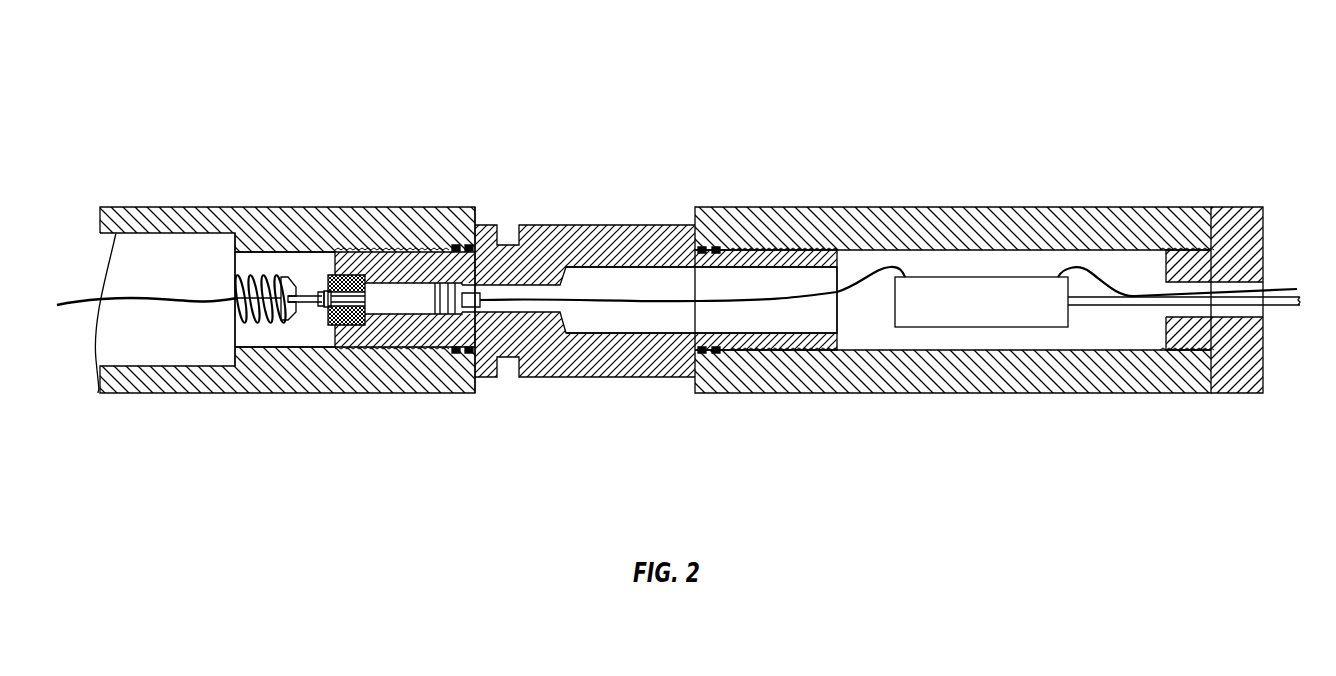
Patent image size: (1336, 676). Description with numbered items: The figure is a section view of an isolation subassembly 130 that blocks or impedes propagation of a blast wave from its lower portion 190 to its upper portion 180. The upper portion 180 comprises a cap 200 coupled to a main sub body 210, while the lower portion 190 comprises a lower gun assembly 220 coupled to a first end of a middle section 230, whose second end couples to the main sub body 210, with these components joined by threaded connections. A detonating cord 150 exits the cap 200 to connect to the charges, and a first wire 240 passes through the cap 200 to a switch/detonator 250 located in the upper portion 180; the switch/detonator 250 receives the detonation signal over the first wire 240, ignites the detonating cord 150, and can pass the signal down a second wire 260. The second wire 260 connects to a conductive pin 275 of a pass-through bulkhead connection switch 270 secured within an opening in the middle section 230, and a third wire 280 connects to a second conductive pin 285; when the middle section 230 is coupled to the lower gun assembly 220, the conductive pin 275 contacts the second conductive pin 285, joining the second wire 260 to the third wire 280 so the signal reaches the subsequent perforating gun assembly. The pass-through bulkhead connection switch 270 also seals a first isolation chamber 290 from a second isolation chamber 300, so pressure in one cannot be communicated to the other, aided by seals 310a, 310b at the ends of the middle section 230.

The isolation subassembly 130 is at (1060, 88).
The detonating cord 150 is at (1279, 307).
The upper portion 180 is at (1250, 398).
The lower portion 190 is at (106, 403).
The cap 200 is at (1240, 207).
The main sub body 210 is at (1013, 207).
The lower gun assembly 220 is at (311, 207).
The middle section 230 is at (569, 224).
The first wire 240 is at (1108, 290).
The switch/detonator 250 is at (973, 312).
The second wire 260 is at (663, 296).
The pass-through bulkhead connection switch 270 is at (392, 326).
The conductive pin 275 is at (352, 300).
The third wire 280 is at (68, 308).
The second conductive pin 285 is at (288, 275).
The first isolation chamber 290 is at (300, 332).
The second isolation chamber 300 is at (632, 312).
The seal 310a is at (698, 378).
The seal 310b is at (470, 355).